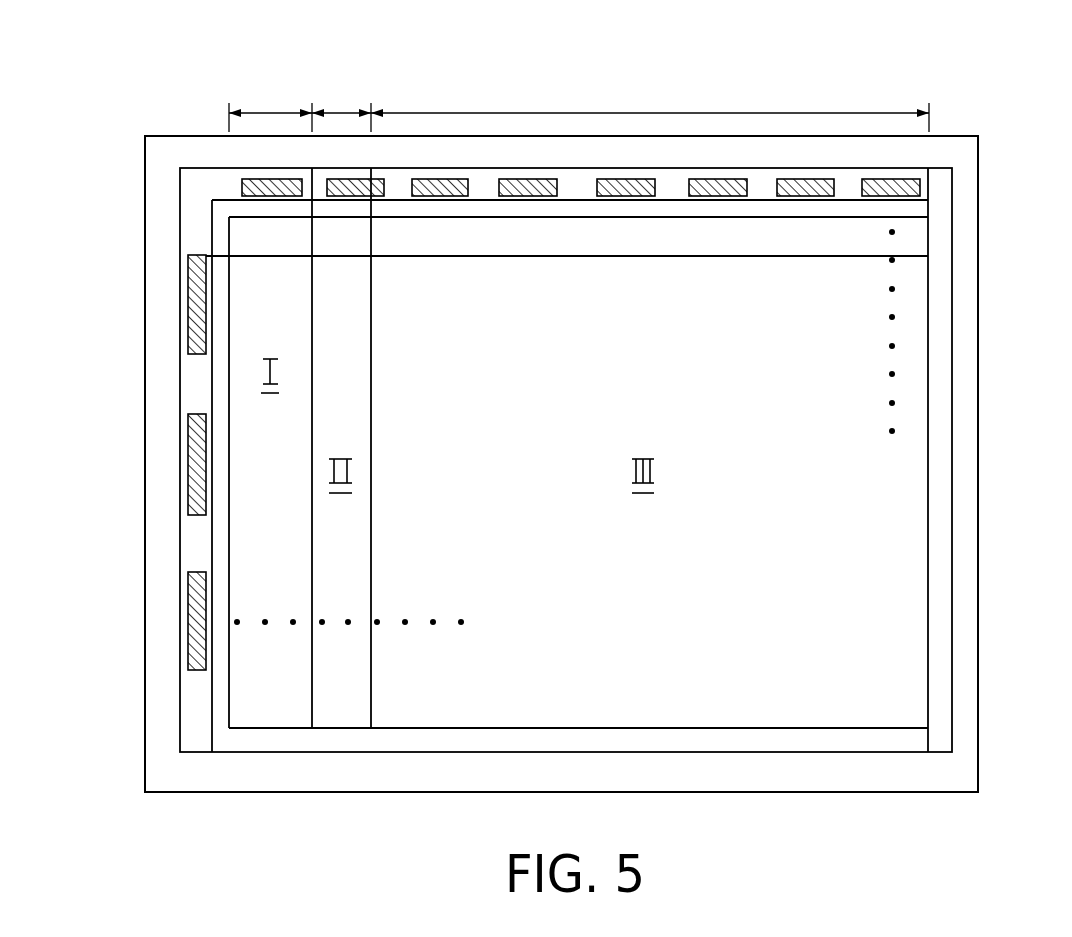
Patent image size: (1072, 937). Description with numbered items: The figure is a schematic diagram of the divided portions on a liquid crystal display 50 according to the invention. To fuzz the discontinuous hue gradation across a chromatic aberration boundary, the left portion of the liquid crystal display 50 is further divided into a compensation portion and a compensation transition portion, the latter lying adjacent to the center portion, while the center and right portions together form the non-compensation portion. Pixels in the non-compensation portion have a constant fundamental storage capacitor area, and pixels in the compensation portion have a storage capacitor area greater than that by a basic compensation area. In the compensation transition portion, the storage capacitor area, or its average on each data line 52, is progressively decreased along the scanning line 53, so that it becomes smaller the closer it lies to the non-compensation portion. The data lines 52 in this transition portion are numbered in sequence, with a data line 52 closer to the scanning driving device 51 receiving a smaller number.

The liquid crystal display 50 is at (819, 97).
The scanning driving device 51 is at (188, 278).
The data line 52 is at (228, 733).
The scanning line 53 is at (928, 217).